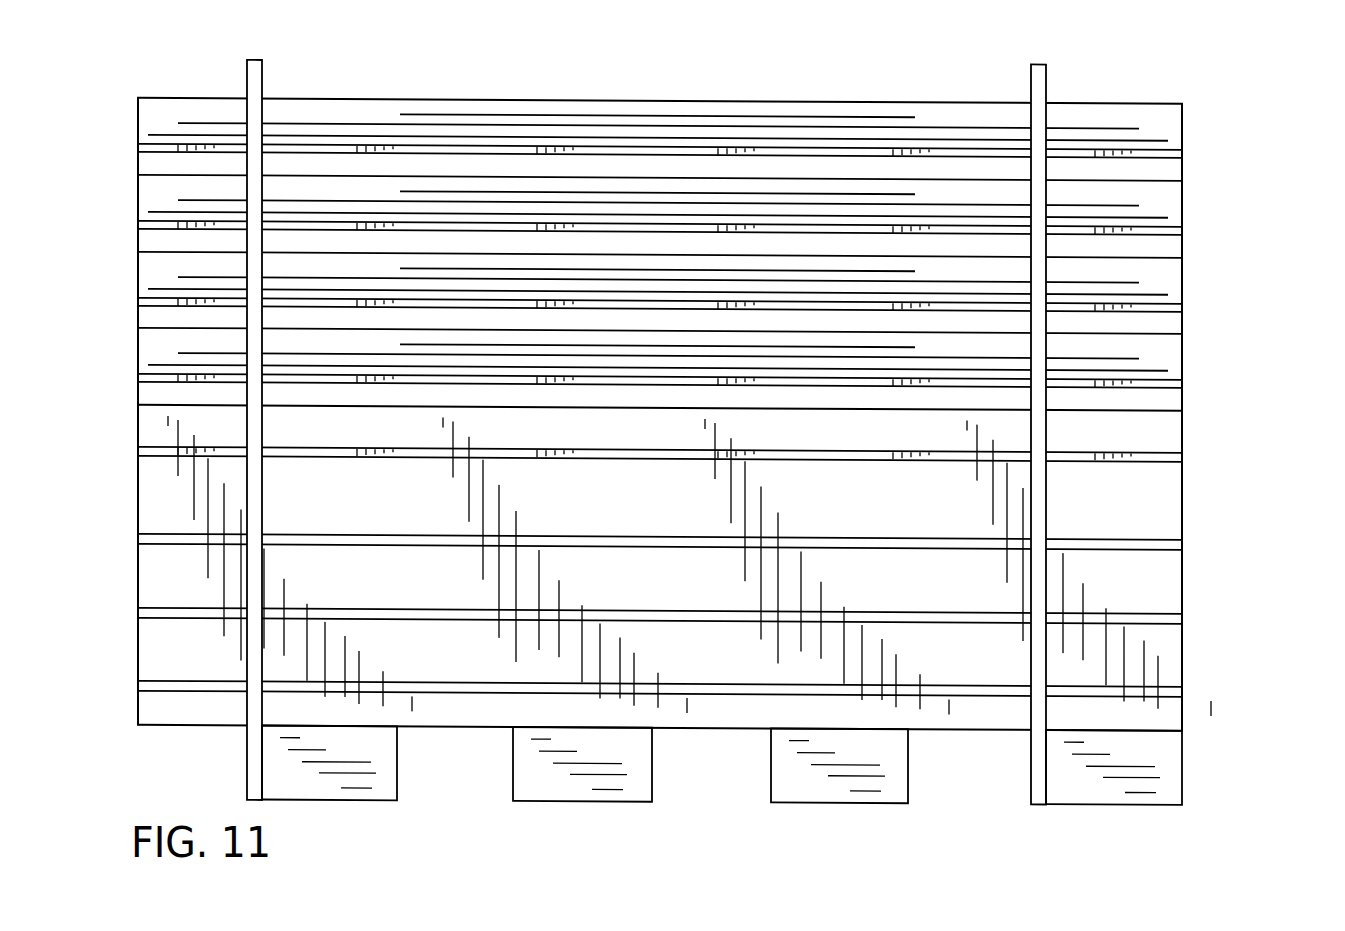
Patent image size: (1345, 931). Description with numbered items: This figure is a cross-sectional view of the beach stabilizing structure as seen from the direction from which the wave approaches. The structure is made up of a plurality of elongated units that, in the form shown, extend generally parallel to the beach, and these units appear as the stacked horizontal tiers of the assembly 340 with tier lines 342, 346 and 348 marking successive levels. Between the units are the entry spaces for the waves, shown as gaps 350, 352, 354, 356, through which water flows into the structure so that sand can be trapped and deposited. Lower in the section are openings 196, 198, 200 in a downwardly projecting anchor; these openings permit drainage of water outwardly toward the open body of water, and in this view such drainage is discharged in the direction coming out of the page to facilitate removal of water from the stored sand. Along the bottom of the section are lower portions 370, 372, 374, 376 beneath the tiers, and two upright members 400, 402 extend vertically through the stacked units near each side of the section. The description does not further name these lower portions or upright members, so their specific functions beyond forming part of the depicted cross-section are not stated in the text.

The opening 196 is at (1155, 546).
The opening 198 is at (1153, 621).
The opening 200 is at (1150, 693).
The memory array layout 340 is at (937, 102).
The first word line group 342 is at (853, 180).
The second word line group 346 is at (775, 257).
The third word line group 348 is at (690, 332).
The gap 350 is at (575, 168).
The gap 352 is at (485, 247).
The gap 354 is at (395, 320).
The gap 356 is at (313, 395).
The first sense amplifier block 370 is at (378, 795).
The second sense amplifier block 372 is at (618, 796).
The third sense amplifier block 374 is at (867, 797).
The fourth sense amplifier block 376 is at (1143, 797).
The left vertical bus bar 400 is at (247, 90).
The right vertical bus bar 402 is at (1047, 93).